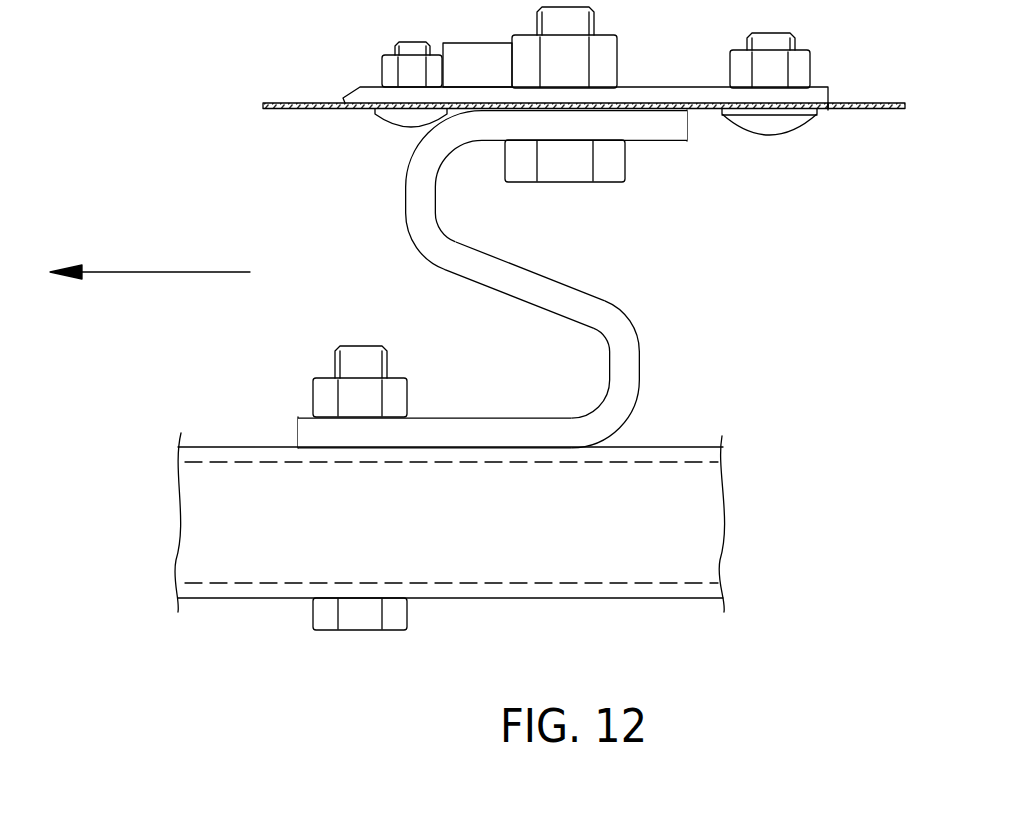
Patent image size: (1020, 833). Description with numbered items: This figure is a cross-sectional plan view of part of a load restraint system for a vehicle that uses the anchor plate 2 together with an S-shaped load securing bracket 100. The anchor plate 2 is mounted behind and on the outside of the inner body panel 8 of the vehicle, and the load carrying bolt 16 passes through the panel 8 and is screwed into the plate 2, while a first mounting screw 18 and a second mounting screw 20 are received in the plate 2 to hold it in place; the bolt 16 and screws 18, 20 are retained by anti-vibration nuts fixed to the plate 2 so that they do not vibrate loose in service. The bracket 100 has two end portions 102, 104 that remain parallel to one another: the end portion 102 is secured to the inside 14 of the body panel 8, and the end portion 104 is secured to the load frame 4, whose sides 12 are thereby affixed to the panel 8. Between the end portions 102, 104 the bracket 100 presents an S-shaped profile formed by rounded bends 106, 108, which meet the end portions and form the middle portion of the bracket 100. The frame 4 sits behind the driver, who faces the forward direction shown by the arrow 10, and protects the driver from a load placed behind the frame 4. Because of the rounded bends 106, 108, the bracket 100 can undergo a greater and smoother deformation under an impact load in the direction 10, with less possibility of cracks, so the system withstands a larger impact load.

The anchor plate 2 is at (680, 76).
The load frame 4 is at (627, 638).
The inner body panel 8 is at (871, 122).
The forward direction arrow 10 is at (158, 273).
The sides of the frame 12 is at (645, 457).
The inside of the inner body panel 14 is at (278, 108).
The load carrying bolt 16 is at (613, 167).
The first mounting screw 18 is at (400, 121).
The second mounting screw 20 is at (782, 125).
The S-shaped load securing bracket 100 is at (507, 279).
The end portion 102 is at (660, 132).
The end portion 104 is at (422, 422).
The rounded bend 106 is at (413, 185).
The rounded bend 108 is at (630, 362).